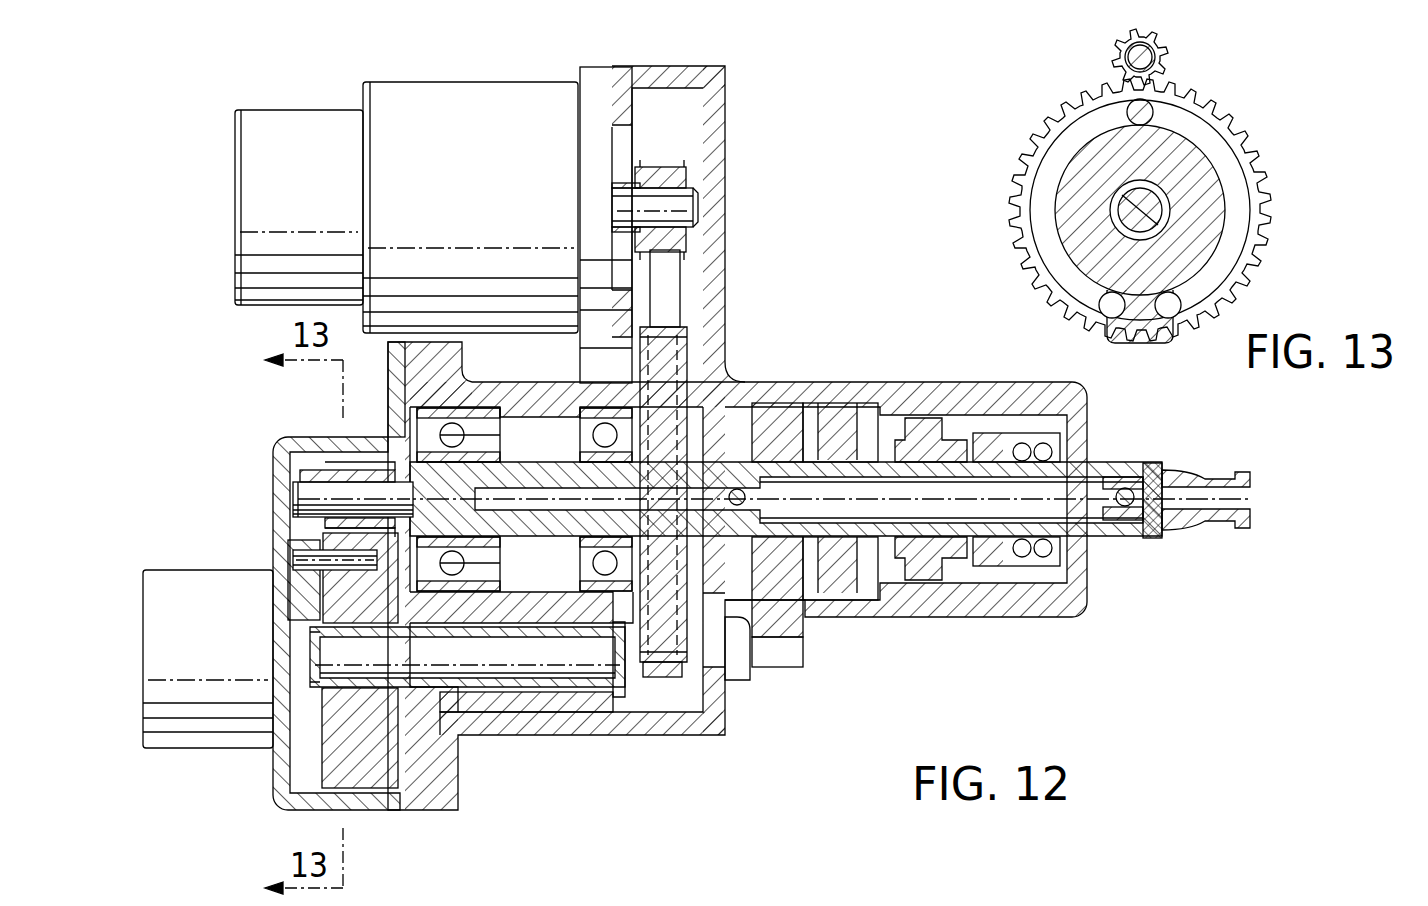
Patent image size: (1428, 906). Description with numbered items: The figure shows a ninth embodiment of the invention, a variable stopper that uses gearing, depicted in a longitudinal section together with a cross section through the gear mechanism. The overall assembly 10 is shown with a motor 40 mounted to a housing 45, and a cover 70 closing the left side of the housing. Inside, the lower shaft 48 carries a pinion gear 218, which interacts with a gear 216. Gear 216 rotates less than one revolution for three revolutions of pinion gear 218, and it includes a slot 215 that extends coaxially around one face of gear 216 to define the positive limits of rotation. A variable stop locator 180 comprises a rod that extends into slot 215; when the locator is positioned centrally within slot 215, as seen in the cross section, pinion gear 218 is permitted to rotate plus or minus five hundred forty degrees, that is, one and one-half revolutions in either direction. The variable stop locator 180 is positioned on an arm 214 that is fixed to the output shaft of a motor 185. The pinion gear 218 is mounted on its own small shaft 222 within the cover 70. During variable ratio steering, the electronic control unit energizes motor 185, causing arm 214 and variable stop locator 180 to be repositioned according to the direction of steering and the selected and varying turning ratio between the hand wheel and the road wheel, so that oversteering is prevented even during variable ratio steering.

In FIG. 12, the drive apparatus 10 is at (772, 438).
In FIG. 12, the motor 40 is at (397, 98).
In FIG. 12, the housing 45 is at (722, 214).
In FIG. 12, the lower shaft 48 is at (500, 474).
In FIG. 12, the cover 70 is at (222, 456).
In FIG. 12, the variable stop locator 180 is at (308, 555).
In FIG. 13, the variable stop locator 180 is at (1157, 98).
In FIG. 12, the motor 185 is at (165, 725).
In FIG. 12, the arm 214 is at (308, 538).
In FIG. 13, the slot 215 is at (1072, 143).
In FIG. 12, the gear 216 is at (370, 773).
In FIG. 13, the gear 216 is at (1223, 123).
In FIG. 12, the pinion gear 218 is at (323, 472).
In FIG. 13, the pinion gear 218 is at (1112, 44).
In FIG. 12, the pinion shaft 222 is at (323, 478).